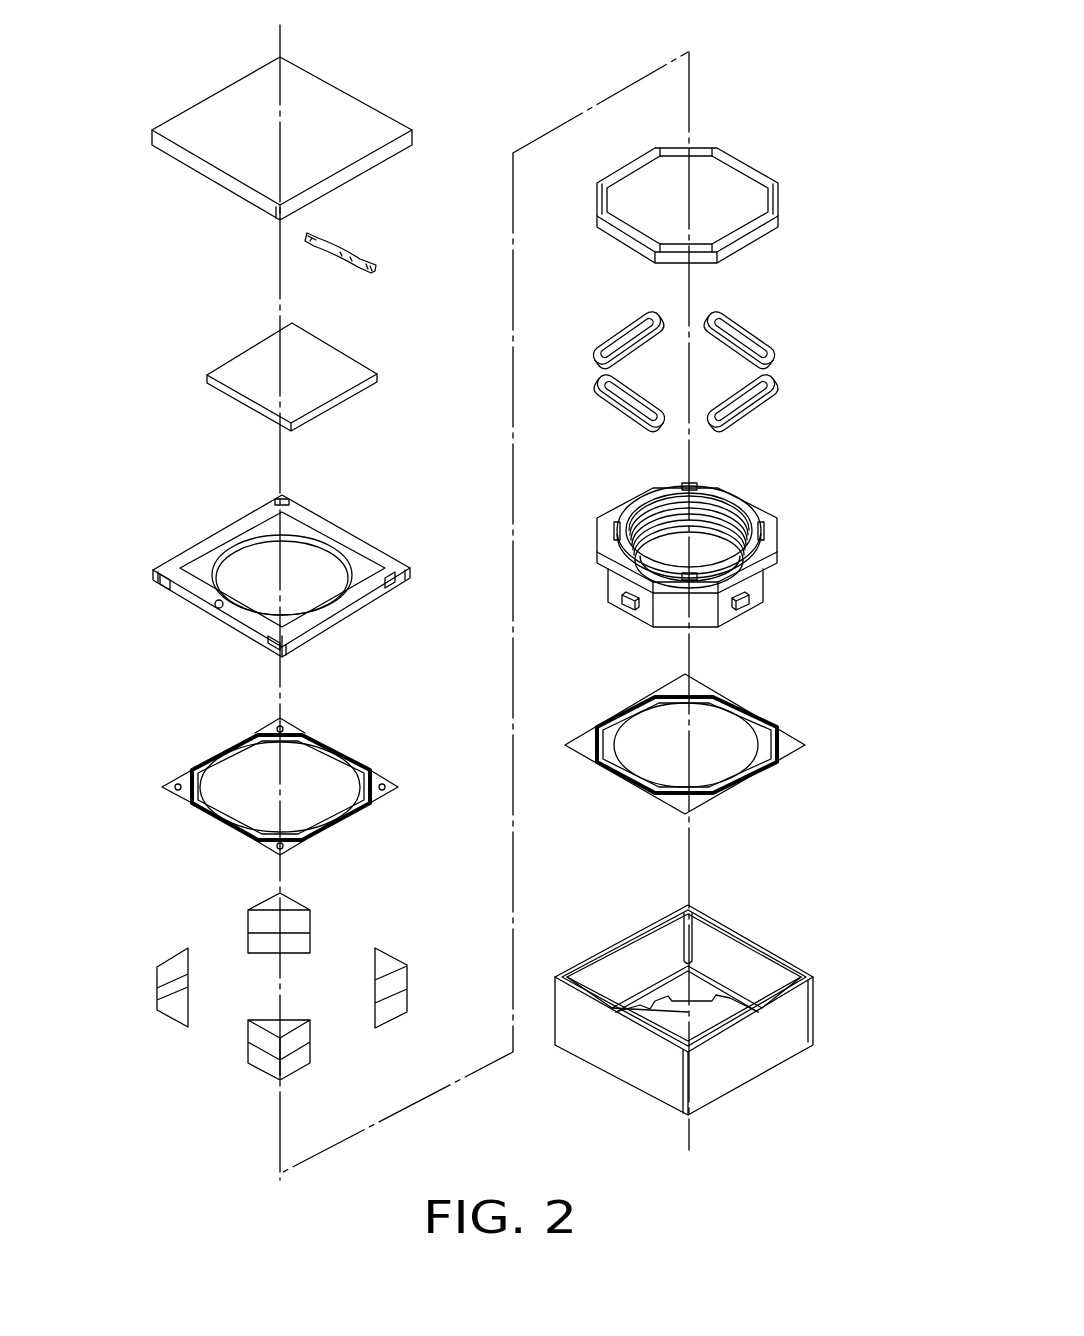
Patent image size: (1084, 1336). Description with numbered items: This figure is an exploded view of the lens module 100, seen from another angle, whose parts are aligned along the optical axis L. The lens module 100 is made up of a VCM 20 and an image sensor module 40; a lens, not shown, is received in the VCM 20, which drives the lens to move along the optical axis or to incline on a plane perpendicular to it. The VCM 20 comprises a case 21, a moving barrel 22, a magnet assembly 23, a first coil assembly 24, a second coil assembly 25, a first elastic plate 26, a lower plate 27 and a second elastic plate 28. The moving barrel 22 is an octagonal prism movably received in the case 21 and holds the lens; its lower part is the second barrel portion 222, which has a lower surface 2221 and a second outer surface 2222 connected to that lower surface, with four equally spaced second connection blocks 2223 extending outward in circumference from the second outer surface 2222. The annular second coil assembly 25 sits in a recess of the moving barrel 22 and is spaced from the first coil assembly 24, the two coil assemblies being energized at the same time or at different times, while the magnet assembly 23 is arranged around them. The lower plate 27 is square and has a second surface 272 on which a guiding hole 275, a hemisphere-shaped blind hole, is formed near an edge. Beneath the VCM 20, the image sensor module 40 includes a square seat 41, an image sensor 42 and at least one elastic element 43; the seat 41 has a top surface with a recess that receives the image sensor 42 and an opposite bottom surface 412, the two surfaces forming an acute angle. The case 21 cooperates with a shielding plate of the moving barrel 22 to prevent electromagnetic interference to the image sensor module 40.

The lens module 100 is at (522, 33).
The VCM 20 is at (110, 552).
The case 21 is at (770, 965).
The moving barrel 22 is at (770, 546).
The second barrel portion 222 is at (635, 503).
The lower surface 2221 is at (748, 505).
The second outer surface 2222 is at (718, 574).
The second connection blocks 2223 is at (620, 531).
The magnet assembly 23 is at (176, 962).
The first coil assembly 24 is at (780, 357).
The second coil assembly 25 is at (760, 237).
The first elastic plate 26 is at (785, 742).
The lower plate 27 is at (188, 598).
The second surface 272 is at (352, 545).
The guiding hole 275 is at (214, 612).
The second elastic plate 28 is at (185, 778).
The image sensor module 40 is at (126, 202).
The seat 41 is at (215, 162).
The bottom surface 412 is at (335, 105).
The image sensor 42 is at (250, 360).
The elastic element 43 is at (305, 243).